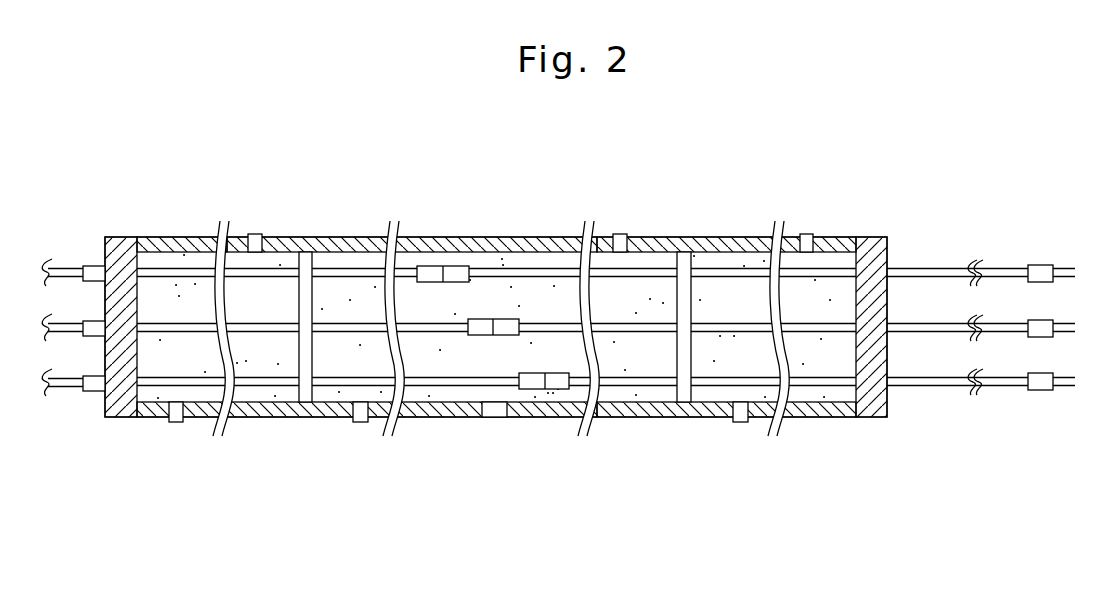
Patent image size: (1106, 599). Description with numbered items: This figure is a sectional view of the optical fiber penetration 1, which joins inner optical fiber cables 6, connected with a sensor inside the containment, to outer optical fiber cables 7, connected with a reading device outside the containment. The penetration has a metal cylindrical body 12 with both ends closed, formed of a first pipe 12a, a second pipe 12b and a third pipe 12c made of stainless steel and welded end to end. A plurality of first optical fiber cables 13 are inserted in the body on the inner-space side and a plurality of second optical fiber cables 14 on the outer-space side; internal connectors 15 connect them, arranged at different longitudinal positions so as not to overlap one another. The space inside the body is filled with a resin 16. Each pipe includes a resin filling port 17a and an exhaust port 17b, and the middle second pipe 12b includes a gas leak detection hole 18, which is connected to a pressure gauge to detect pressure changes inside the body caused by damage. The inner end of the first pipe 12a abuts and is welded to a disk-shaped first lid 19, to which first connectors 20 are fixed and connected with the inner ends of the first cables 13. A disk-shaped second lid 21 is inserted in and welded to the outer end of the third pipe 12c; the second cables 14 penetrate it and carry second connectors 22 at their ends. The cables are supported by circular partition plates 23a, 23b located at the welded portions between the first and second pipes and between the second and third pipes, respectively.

The optical fiber penetration 1 is at (858, 157).
The inner optical fiber cables 6 is at (56, 266).
The outer optical fiber cables 7 is at (1068, 268).
The cylindrical body 12 is at (870, 238).
The first pipe 12a is at (168, 237).
The second pipe 12b is at (477, 237).
The third pipe 12c is at (732, 237).
The first optical fiber cables 13 is at (337, 268).
The second optical fiber cables 14 is at (545, 268).
The internal connectors 15 is at (430, 265).
The resin 16 is at (437, 350).
The resin filling port 17a is at (176, 422).
The exhaust port 17b is at (255, 234).
The gas leak detection hole 18 is at (502, 418).
The first lid 19 is at (116, 240).
The first connectors 20 is at (92, 266).
The second lid 21 is at (887, 261).
The second connectors 22 is at (1040, 265).
The first partition plate 23a is at (299, 265).
The second partition plate 23b is at (677, 265).